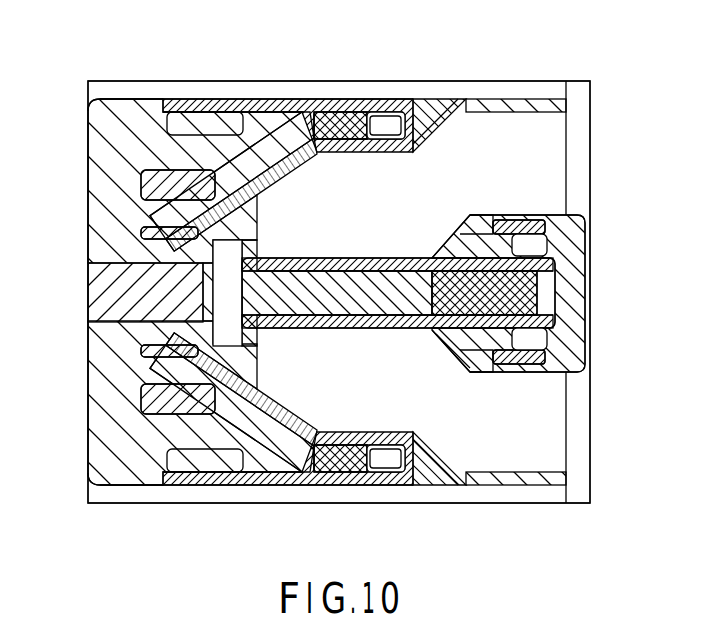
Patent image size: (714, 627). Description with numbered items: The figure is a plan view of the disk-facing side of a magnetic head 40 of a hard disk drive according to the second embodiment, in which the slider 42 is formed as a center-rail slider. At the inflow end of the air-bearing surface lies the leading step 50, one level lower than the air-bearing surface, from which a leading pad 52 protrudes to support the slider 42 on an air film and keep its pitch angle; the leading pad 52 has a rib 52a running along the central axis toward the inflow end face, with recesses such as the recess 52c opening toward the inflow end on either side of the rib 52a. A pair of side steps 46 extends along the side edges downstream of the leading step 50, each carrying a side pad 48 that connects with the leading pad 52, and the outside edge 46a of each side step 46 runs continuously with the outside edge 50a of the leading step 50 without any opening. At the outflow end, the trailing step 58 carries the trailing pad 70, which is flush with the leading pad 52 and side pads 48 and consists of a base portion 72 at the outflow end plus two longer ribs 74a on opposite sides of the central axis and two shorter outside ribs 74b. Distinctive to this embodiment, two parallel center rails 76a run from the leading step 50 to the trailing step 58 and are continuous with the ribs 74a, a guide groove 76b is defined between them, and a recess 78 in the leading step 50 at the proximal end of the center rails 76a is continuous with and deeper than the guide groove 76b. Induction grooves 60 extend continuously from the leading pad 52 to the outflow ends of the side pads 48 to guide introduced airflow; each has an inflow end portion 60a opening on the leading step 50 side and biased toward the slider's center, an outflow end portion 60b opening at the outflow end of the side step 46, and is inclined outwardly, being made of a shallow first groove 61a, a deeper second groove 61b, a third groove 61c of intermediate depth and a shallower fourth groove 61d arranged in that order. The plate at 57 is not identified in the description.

The magnetic head 40 is at (605, 412).
The slider 42 is at (276, 74).
The side step 46 is at (364, 153).
The outside edge 46a is at (308, 104).
The side pad 48 is at (436, 114).
The leading step 50 is at (93, 345).
The outside edge 50a is at (140, 99).
The leading pad 52 is at (258, 118).
The rib 52a is at (96, 290).
The recess 52c is at (160, 122).
The frame plate 57 is at (530, 104).
The trailing step 58 is at (578, 231).
The induction groove 60 is at (257, 183).
The inflow end portion 60a is at (156, 234).
The outflow end portion 60b is at (384, 136).
The first groove 61a is at (148, 165).
The second groove 61b is at (288, 150).
The third groove 61c is at (336, 118).
The fourth groove 61d is at (390, 125).
The trailing pad 70 is at (575, 318).
The base portion 72 is at (575, 273).
The rib 74a is at (472, 248).
The outside rib 74b is at (517, 226).
The center rail 76a is at (382, 262).
The guide groove 76b is at (402, 273).
The recess 78 is at (243, 288).